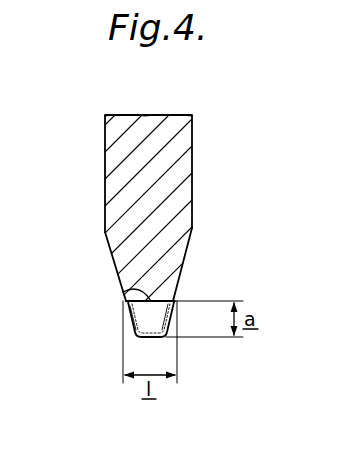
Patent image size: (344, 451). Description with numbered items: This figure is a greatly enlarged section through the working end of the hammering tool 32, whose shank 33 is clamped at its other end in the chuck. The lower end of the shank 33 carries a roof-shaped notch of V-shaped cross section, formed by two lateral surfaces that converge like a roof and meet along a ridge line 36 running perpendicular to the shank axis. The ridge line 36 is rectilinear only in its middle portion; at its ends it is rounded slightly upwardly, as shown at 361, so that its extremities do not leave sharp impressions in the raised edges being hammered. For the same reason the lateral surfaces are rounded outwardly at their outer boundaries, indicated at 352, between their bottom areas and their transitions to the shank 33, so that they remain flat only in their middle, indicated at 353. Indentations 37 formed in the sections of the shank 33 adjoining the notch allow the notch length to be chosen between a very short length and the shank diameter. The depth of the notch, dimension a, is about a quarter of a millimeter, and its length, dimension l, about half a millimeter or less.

The hammering tool 32 is at (99, 136).
The shank 33 is at (185, 139).
The indentations 37 is at (191, 244).
The ridge line 36 is at (123, 292).
The rounded ends of the ridge line 361 is at (128, 310).
The outward roundings of the lateral surfaces 352 is at (158, 318).
The flat middle portion of the lateral surfaces 353 is at (167, 327).